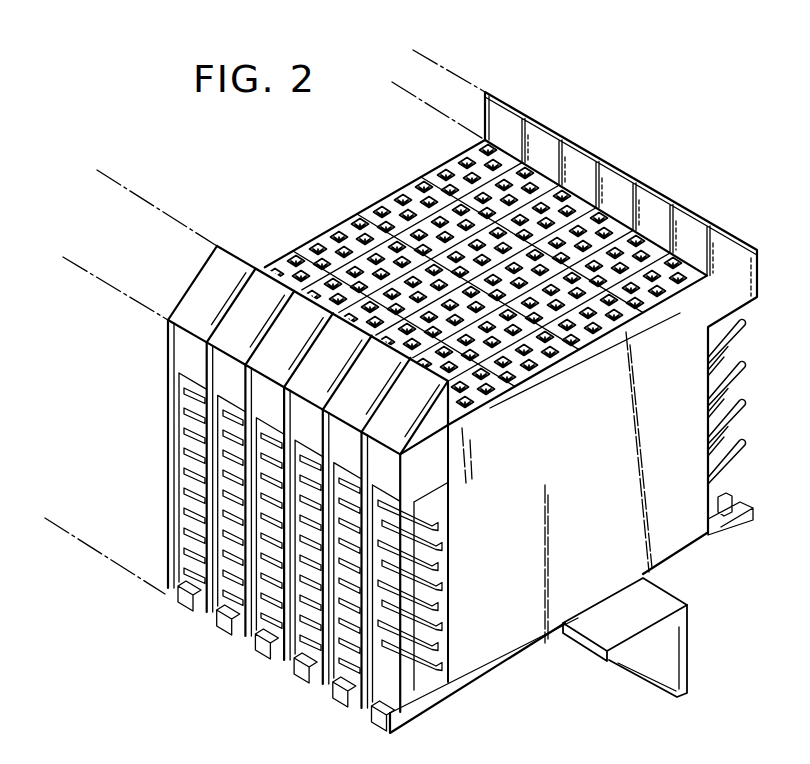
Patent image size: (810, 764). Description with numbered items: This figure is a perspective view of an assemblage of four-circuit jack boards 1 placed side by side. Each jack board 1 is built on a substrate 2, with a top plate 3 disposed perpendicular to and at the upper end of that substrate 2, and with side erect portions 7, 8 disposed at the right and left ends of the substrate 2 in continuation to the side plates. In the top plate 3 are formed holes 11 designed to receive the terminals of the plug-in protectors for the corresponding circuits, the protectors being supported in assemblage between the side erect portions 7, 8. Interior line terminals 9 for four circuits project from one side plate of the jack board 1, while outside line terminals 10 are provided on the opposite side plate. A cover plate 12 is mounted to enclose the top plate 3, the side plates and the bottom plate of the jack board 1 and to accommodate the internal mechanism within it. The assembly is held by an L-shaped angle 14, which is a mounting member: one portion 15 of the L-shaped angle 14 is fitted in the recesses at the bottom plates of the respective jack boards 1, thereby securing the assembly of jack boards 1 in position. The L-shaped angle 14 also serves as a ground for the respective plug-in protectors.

The jack board 1 is at (316, 212).
The substrate 2 is at (168, 517).
The top plate 3 is at (306, 244).
The side erect portion 7 is at (688, 213).
The side erect portion 8 is at (236, 319).
The interior line terminals 9 is at (740, 364).
The outside line terminals 10 is at (190, 470).
The holes 11 is at (393, 208).
The cover plate 12 is at (676, 543).
The L-shaped angle 14 is at (636, 680).
The portion of the L-shaped angle 15 is at (595, 628).